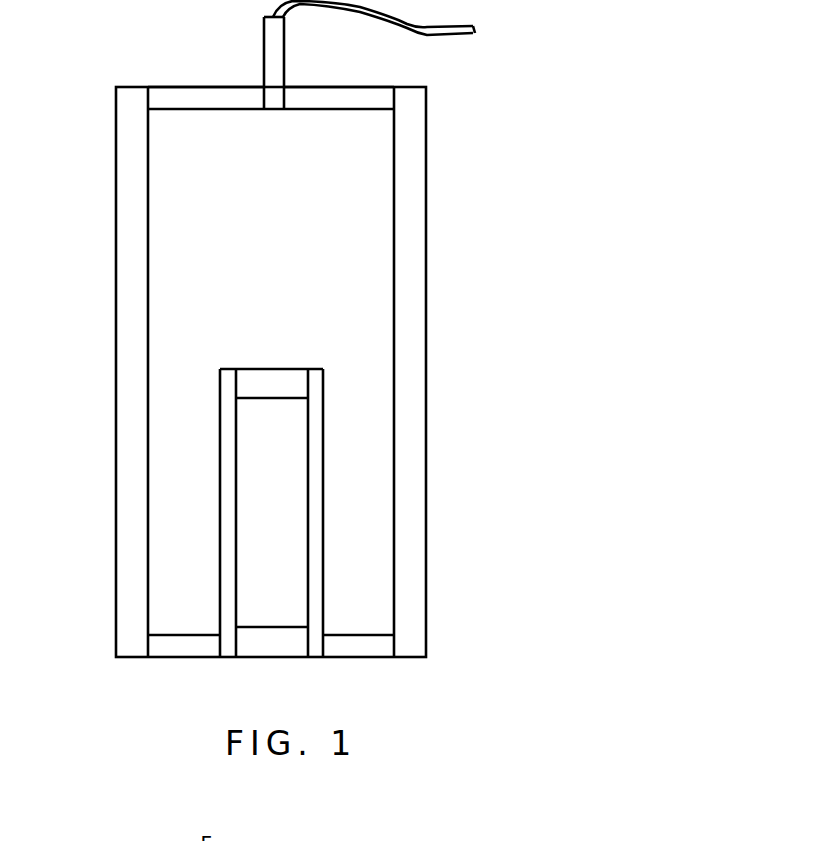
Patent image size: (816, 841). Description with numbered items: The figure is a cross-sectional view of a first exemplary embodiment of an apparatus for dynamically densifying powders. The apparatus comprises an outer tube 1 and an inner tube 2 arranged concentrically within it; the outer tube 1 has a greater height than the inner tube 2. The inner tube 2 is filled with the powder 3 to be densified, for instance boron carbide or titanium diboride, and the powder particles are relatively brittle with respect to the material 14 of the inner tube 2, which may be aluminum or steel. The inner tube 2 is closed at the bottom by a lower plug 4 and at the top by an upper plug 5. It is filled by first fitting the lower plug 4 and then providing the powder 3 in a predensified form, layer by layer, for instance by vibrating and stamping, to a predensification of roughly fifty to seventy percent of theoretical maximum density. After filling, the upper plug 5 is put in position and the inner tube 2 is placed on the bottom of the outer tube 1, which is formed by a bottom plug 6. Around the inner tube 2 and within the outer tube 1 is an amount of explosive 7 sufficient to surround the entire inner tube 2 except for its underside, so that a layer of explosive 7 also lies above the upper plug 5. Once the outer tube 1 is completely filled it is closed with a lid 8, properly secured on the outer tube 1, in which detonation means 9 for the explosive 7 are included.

The outer tube 1 is at (415, 205).
The inner tube 2 is at (317, 415).
The powder 3 is at (286, 516).
The lower plug 4 is at (273, 647).
The upper plug 5 is at (275, 378).
The bottom plug 6 is at (353, 643).
The explosive 7 is at (318, 232).
The lid 8 is at (188, 95).
The detonation means 9 is at (272, 70).
The material of the inner tube 14 is at (227, 428).